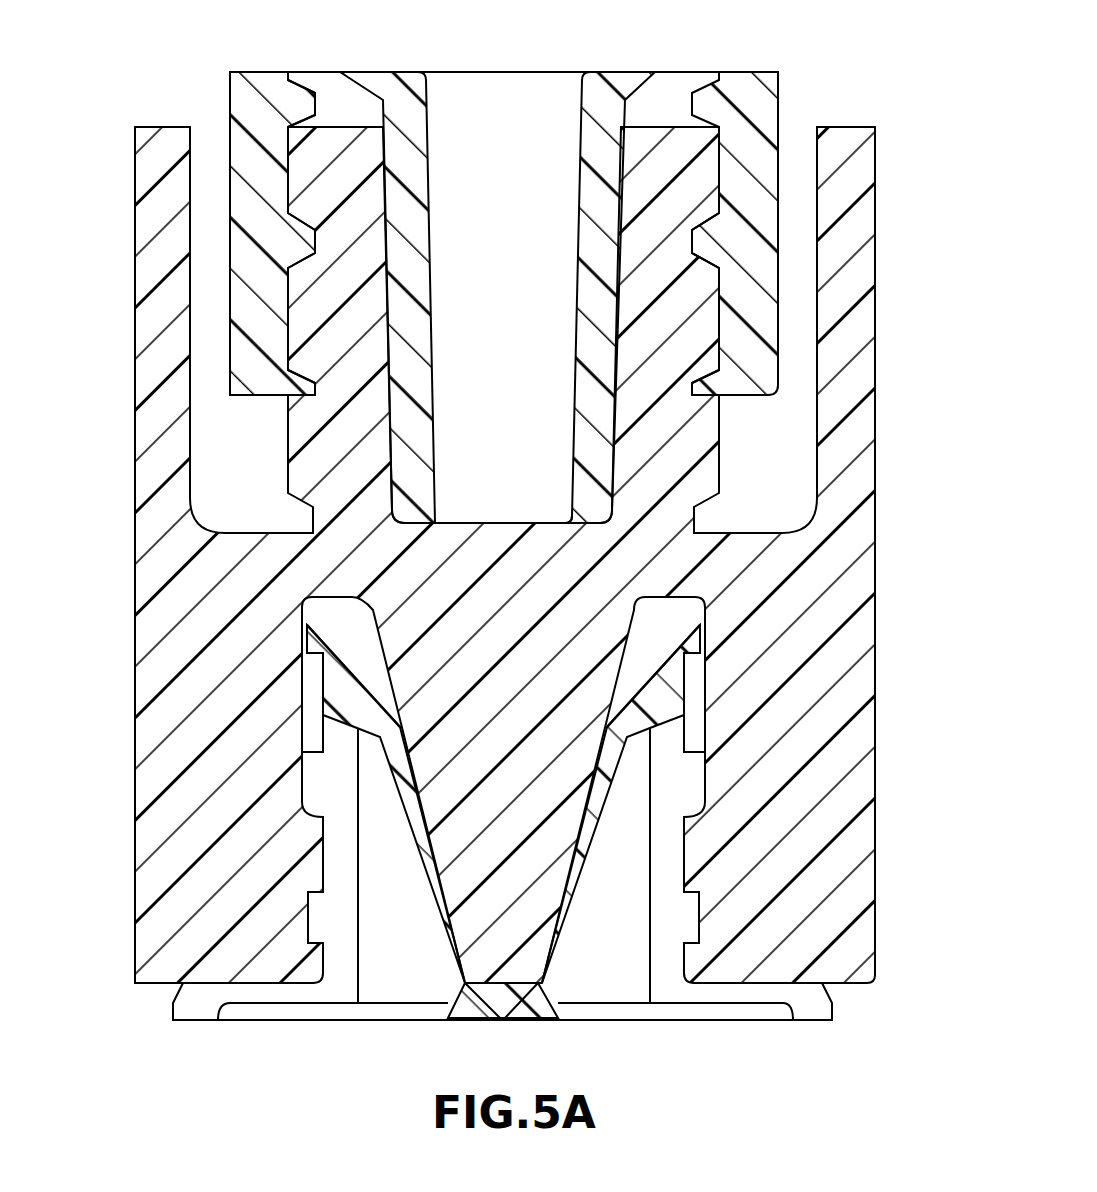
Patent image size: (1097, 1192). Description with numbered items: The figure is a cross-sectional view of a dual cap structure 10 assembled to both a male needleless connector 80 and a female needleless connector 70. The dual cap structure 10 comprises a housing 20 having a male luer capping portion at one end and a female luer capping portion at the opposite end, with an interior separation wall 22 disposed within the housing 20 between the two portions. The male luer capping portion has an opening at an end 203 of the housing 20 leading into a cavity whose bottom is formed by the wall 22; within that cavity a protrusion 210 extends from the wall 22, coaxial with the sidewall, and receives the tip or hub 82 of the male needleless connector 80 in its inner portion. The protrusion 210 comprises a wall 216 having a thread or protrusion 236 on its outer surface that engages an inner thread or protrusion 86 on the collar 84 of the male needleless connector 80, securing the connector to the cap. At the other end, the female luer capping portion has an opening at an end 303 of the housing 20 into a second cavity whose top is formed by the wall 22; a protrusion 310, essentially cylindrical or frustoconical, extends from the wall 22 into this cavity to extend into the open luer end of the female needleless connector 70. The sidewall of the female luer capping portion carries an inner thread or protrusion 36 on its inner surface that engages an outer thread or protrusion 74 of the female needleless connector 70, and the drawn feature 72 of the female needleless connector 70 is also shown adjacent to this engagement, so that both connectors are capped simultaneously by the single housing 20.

The dual cap structure 10 is at (172, 72).
The housing 20 is at (549, 555).
The wall 22 is at (508, 568).
The inner thread or protrusion 36 is at (305, 865).
The female needleless connector 70 is at (665, 985).
The right arm 72 is at (670, 745).
The outer thread or protrusion 74 is at (308, 773).
The male needleless connector 80 is at (622, 72).
The tip or hub 82 is at (597, 455).
The collar 84 is at (250, 258).
The inner thread or protrusion 86 is at (705, 243).
The end of housing 203 is at (803, 125).
The protrusion 210 is at (338, 137).
The wall 216 is at (673, 165).
The thread or protrusion 236 is at (298, 173).
The end of housing 303 is at (258, 983).
The protrusion 310 is at (535, 960).